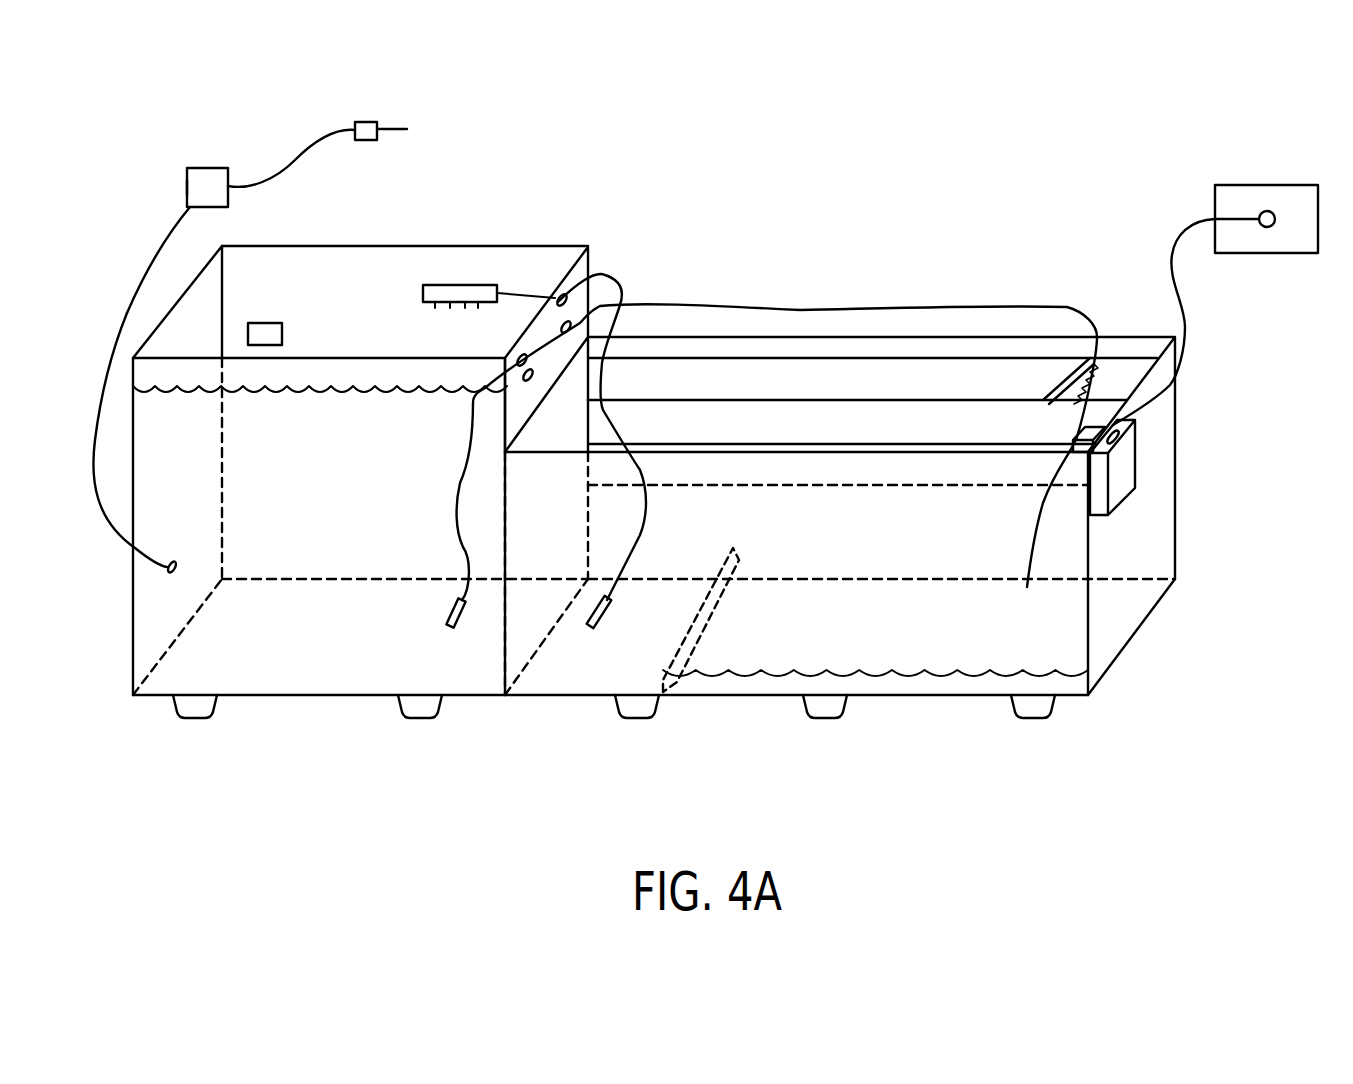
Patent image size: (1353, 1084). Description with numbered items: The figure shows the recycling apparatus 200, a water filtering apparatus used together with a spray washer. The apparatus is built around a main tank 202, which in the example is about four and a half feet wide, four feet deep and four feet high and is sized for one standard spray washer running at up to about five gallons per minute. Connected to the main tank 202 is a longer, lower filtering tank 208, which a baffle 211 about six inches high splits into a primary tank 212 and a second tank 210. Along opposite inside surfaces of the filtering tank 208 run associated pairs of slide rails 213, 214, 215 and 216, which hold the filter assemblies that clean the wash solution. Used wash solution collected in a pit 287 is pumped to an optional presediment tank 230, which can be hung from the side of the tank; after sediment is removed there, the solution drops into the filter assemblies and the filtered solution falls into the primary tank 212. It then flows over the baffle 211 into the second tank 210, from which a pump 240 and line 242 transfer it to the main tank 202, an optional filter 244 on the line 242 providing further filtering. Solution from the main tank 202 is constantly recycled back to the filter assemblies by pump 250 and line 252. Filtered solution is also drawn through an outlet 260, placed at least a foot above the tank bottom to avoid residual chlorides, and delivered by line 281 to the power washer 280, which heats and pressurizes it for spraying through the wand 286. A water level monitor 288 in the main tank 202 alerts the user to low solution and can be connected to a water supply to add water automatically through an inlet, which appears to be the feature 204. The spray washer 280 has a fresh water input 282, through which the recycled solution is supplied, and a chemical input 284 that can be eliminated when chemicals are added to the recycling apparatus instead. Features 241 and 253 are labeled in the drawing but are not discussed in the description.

The recycling apparatus 200 is at (690, 765).
The main tank 202 is at (283, 673).
The upper rim of first tank 204 is at (433, 245).
The filtering tank 208 is at (877, 653).
The second tank 210 is at (562, 683).
The baffle 211 is at (707, 612).
The primary tank 212 is at (950, 685).
The slide rail 213 is at (900, 355).
The slide rail 214 is at (928, 400).
The slide rail 215 is at (825, 443).
The slide rail 216 is at (893, 487).
The presediment tank 230 is at (1130, 467).
The pump 240 is at (612, 611).
The cable 241 is at (1193, 335).
The line 242 is at (645, 530).
The filter 244 is at (476, 285).
The pump 250 is at (445, 613).
The line 252 is at (465, 470).
The serrated rail 253 is at (1053, 388).
The outlet 260 is at (533, 375).
The power washer 280 is at (207, 177).
The line 281 is at (135, 296).
The fresh water input 282 is at (165, 226).
The chemical input 284 is at (187, 178).
The wand 286 is at (367, 142).
The pit 287 is at (1267, 243).
The water level monitor 288 is at (282, 333).